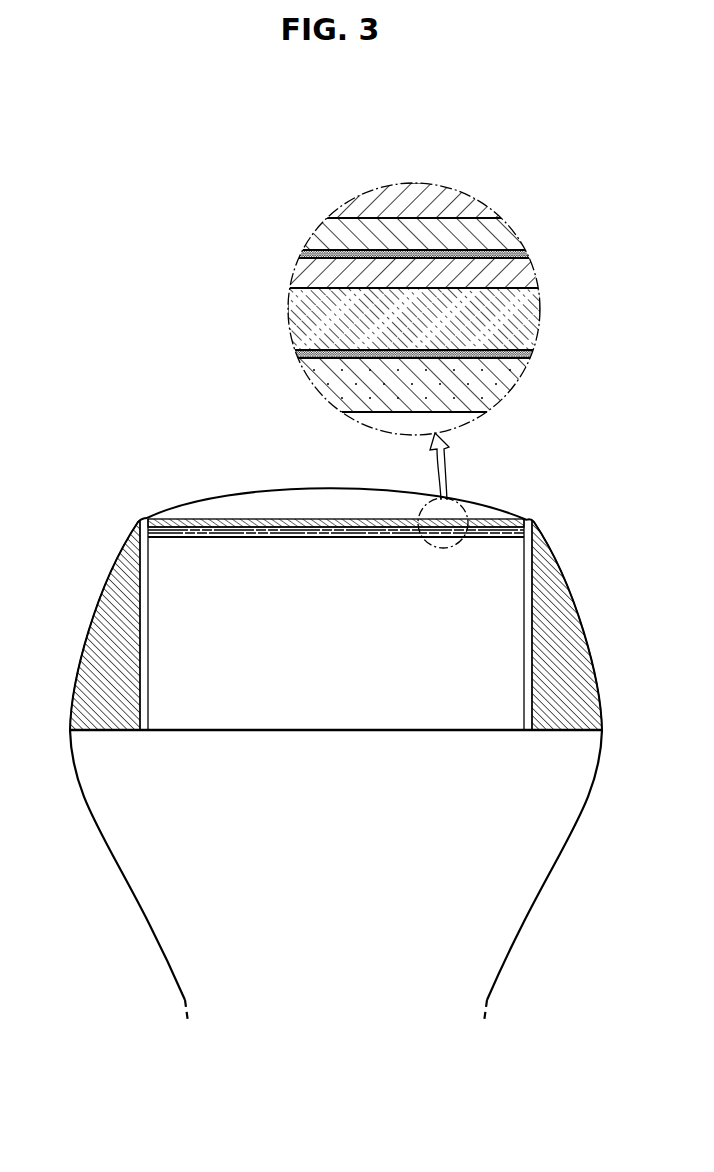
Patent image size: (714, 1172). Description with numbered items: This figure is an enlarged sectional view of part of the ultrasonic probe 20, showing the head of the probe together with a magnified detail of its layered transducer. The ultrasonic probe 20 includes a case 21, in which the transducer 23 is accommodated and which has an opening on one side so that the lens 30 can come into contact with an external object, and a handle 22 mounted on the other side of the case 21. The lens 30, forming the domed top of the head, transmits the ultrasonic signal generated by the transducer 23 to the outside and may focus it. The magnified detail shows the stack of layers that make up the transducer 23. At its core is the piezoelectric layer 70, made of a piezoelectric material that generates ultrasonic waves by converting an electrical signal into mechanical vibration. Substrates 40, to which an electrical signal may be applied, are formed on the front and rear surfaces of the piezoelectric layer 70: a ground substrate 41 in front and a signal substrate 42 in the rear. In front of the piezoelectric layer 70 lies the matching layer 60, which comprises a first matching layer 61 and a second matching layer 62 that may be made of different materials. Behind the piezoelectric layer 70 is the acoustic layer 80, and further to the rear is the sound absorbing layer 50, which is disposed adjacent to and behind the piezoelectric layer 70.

The ultrasonic probe 20 is at (273, 468).
The case 21 is at (83, 665).
The handle 22 is at (80, 748).
The transducer 23 is at (178, 640).
The lens 30 is at (222, 498).
The substrate 40 is at (450, 303).
The ground substrate 41 is at (530, 255).
The signal substrate 42 is at (530, 355).
The sound absorbing layer 50 is at (505, 390).
The matching layer 60 is at (566, 182).
The first matching layer 61 is at (510, 235).
The second matching layer 62 is at (482, 207).
The piezoelectric layer 70 is at (520, 272).
The acoustic layer 80 is at (528, 313).